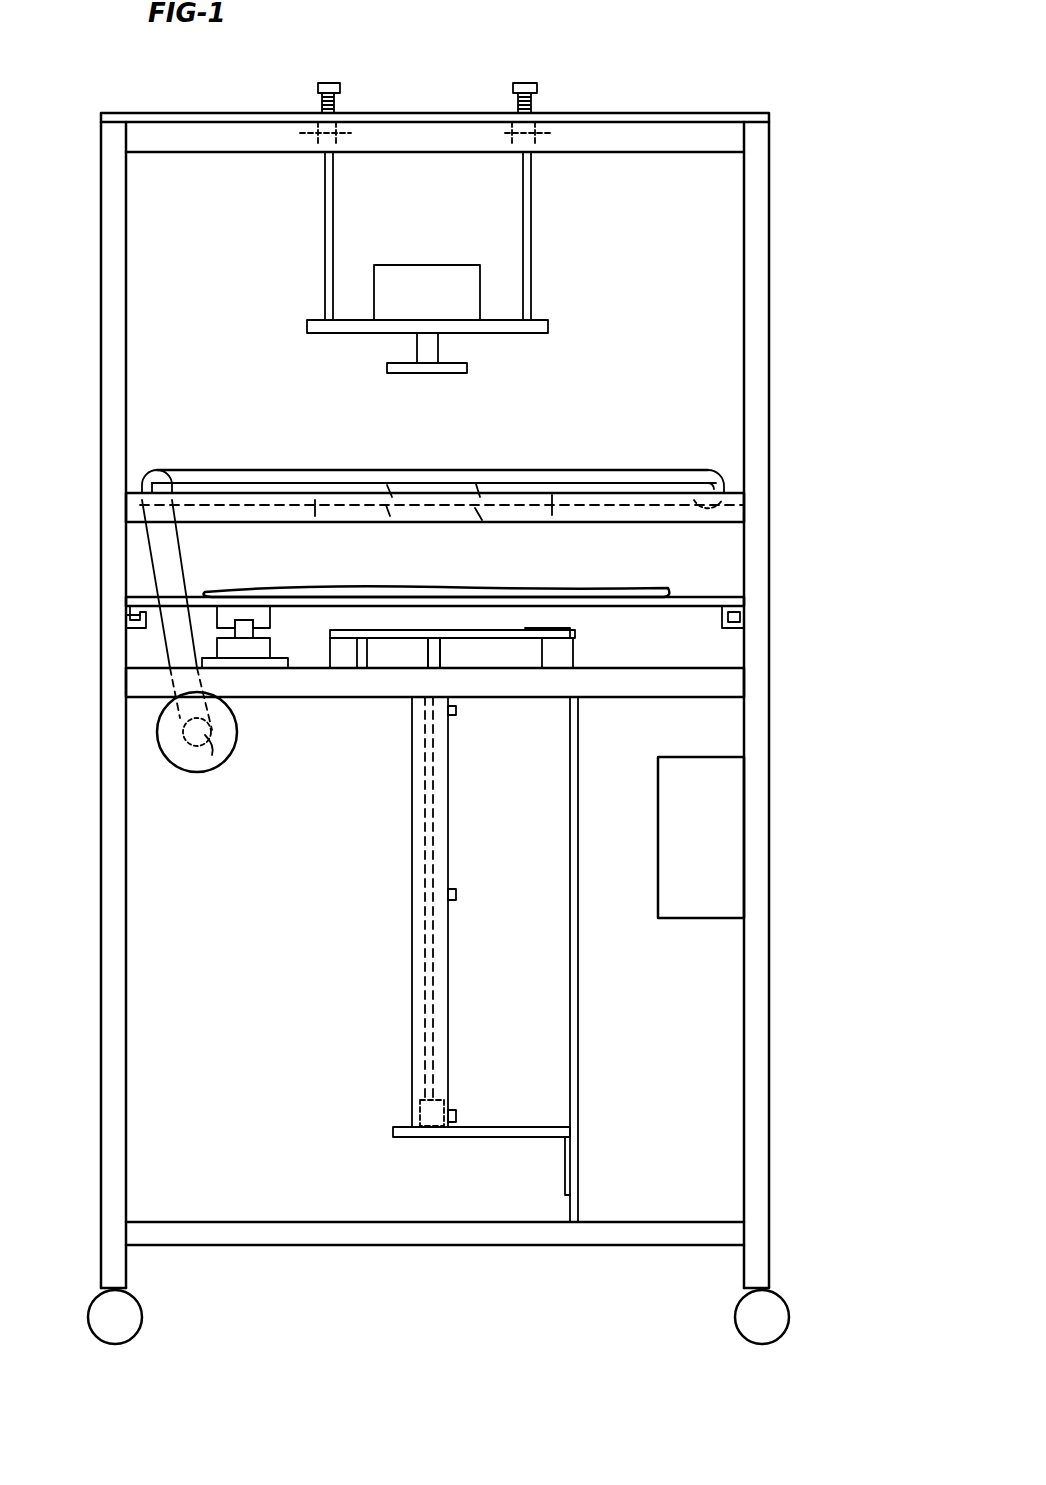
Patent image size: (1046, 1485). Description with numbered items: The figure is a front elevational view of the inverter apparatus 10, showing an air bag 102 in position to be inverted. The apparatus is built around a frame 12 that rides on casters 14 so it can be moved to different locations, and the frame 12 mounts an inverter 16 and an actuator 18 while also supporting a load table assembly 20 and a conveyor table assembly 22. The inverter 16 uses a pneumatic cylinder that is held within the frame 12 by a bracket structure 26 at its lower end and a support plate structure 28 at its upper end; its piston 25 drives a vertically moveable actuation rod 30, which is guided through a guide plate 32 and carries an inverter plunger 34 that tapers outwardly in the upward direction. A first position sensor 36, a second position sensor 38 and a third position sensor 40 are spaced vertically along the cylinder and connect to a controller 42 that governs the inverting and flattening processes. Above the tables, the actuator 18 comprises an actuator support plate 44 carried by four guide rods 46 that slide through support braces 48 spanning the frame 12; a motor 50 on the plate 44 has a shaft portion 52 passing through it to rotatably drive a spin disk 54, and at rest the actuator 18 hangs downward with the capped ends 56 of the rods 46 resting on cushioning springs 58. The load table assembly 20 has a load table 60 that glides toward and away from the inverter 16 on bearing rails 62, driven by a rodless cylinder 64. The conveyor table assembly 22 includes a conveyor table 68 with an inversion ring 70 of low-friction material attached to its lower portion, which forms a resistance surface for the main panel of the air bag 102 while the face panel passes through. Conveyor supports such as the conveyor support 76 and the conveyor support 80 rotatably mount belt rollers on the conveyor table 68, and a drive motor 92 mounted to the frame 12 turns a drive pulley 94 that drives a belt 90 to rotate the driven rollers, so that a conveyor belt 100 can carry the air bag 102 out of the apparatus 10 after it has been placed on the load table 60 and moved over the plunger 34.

The inverter apparatus 10 is at (155, 93).
The frame 12 is at (735, 113).
The casters 14 is at (142, 1317).
The inverter 16 is at (390, 945).
The actuator 18 is at (545, 270).
The load table assembly 20 is at (717, 593).
The conveyor table assembly 22 is at (612, 466).
The piston 25 is at (418, 1112).
The bracket structure 26 is at (540, 1132).
The support plate structure 28 is at (495, 690).
The actuation rod 30 is at (428, 655).
The guide plate 32 is at (560, 630).
The inverter plunger 34 is at (450, 625).
The first position sensor 36 is at (457, 1115).
The second position sensor 38 is at (456, 895).
The third position sensor 40 is at (456, 712).
The controller 42 is at (660, 880).
The actuator support plate 44 is at (316, 325).
The guide rods 46 is at (325, 186).
The support braces 48 is at (318, 138).
The motor 50 is at (425, 265).
The shaft portion 52 is at (420, 345).
The spin disk 54 is at (467, 367).
The capped ends 56 is at (328, 80).
The cushioning springs 58 is at (520, 106).
The load table 60 is at (680, 597).
The bearing rails 62 is at (165, 607).
The rodless cylinder 64 is at (245, 652).
The conveyor table 68 is at (668, 470).
The inversion ring 70 is at (555, 517).
The conveyor support 76 is at (160, 483).
The conveyor support 80 is at (700, 475).
The belt 90 is at (182, 578).
The drive motor 92 is at (190, 770).
The drive pulley 94 is at (212, 735).
The conveyor belt 100 is at (210, 470).
The air bag 102 is at (455, 587).